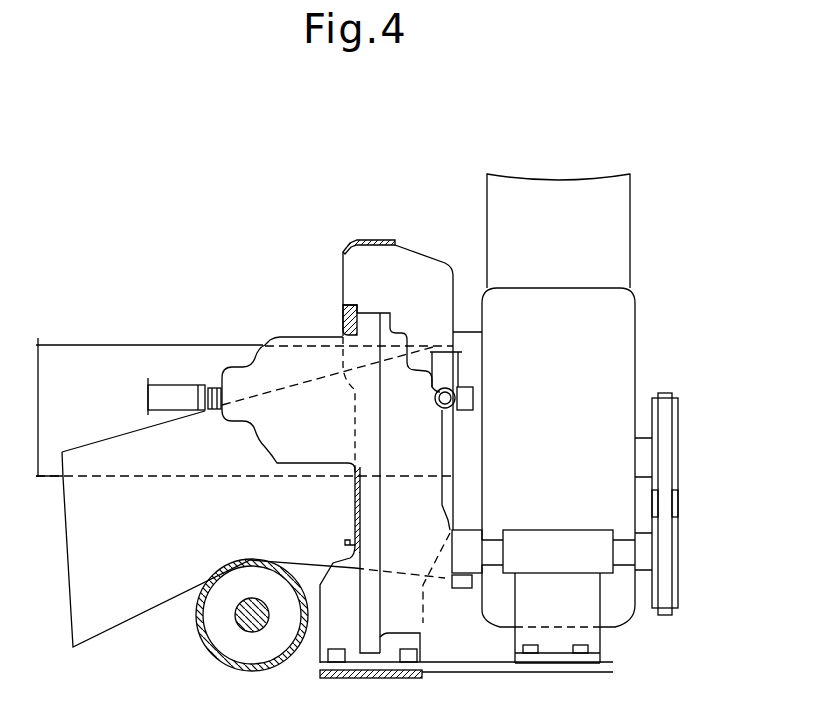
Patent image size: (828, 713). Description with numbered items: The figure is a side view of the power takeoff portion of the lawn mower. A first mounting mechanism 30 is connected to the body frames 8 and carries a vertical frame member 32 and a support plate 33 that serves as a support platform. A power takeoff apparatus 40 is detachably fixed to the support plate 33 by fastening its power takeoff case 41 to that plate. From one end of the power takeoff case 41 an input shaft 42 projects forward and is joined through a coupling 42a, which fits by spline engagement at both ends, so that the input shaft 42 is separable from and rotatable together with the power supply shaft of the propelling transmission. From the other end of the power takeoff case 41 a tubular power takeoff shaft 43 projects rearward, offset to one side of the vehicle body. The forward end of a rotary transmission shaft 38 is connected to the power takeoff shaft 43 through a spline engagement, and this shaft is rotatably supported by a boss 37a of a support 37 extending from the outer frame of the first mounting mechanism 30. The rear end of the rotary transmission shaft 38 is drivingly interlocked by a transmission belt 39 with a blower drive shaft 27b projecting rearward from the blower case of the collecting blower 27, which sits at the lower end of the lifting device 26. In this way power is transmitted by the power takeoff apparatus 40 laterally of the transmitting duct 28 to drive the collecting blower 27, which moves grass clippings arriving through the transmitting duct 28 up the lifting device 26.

The body frames 8 is at (72, 360).
The lifting device 26 is at (618, 226).
The collecting blower 27 is at (608, 320).
The blower drive shaft 27b is at (643, 453).
The transmitting duct 28 is at (158, 582).
The first mounting mechanism 30 is at (360, 224).
The vertical frame member 32 is at (433, 270).
The support plate 33 is at (352, 305).
The support 37 is at (593, 635).
The boss 37a is at (548, 540).
The rotary transmission shaft 38 is at (625, 545).
The transmission belt 39 is at (663, 470).
The power takeoff apparatus 40 is at (294, 330).
The power takeoff case 41 is at (297, 430).
The input shaft 42 is at (212, 383).
The coupling 42a is at (163, 392).
The power takeoff shaft 43 is at (468, 560).